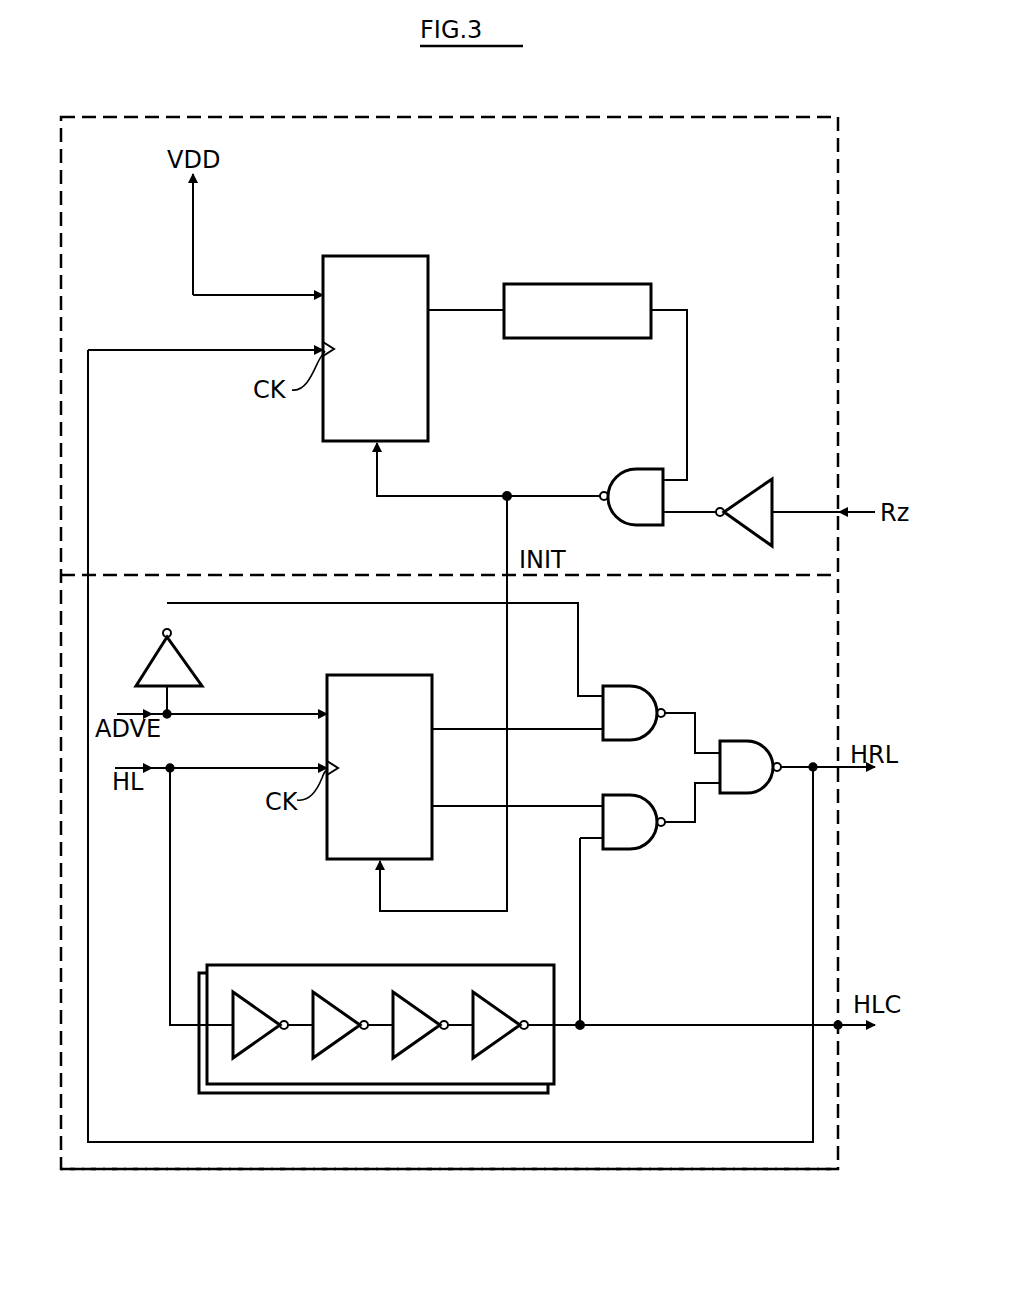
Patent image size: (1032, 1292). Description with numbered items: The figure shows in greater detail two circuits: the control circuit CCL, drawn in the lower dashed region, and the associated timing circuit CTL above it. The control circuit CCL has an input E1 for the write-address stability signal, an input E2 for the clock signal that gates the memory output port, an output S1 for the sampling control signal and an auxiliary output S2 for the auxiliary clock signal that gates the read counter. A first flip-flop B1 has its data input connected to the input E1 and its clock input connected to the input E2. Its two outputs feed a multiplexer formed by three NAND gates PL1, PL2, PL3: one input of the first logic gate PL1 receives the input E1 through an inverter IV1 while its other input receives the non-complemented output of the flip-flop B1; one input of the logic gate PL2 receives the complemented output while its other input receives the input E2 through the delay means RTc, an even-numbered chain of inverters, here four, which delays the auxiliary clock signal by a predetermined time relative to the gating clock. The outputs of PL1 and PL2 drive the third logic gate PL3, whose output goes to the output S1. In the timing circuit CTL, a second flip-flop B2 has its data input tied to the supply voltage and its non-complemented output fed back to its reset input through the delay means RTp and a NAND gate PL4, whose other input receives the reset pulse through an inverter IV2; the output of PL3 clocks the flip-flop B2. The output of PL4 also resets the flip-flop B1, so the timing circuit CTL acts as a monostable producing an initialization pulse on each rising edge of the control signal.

The timing circuit CTL is at (680, 117).
The control circuit CCL is at (690, 1170).
The second D-type flip-flop B2 is at (377, 254).
The first flip-flop B1 is at (325, 845).
The delay means RTp is at (577, 311).
The delay means RTc is at (387, 1090).
The first logic gate PL1 is at (620, 707).
The logic gate PL2 is at (625, 822).
The third logic gate PL3 is at (740, 766).
The NAND logic gate PL4 is at (632, 490).
The inverter IV1 is at (170, 670).
The inverter IV2 is at (748, 510).
The output S1 is at (813, 760).
The auxiliary output S2 is at (838, 1030).
The input E1 is at (169, 717).
The input E2 is at (172, 771).